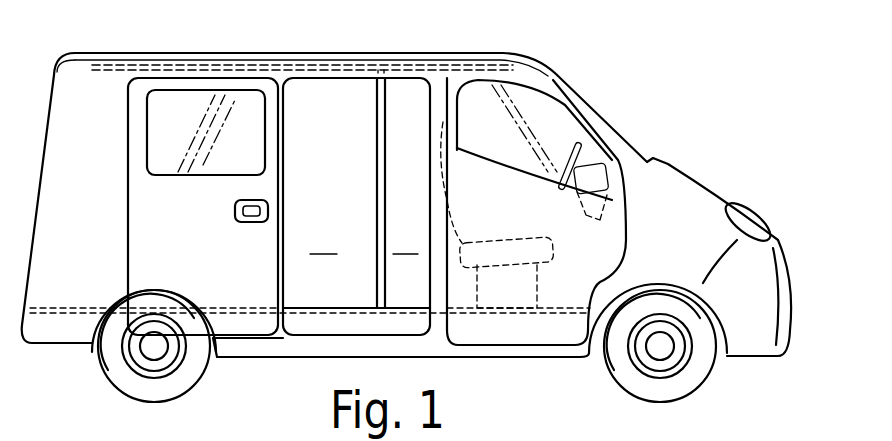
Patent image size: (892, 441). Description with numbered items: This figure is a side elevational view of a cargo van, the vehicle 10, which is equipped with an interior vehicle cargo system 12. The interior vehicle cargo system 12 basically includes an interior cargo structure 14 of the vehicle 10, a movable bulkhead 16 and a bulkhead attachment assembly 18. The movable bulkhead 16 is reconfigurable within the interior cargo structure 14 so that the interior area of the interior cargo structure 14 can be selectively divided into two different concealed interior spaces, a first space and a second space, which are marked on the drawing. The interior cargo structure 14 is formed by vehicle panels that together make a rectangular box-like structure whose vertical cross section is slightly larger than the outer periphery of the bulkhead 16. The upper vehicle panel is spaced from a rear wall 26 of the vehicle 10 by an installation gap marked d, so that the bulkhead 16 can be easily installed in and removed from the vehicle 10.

The vehicle 10 is at (643, 101).
The interior vehicle cargo system 12 is at (326, 282).
The interior cargo structure 14 is at (93, 265).
The movable bulkhead 16 is at (378, 177).
The bulkhead attachment assembly 18 is at (430, 63).
The rear wall 26 is at (35, 152).